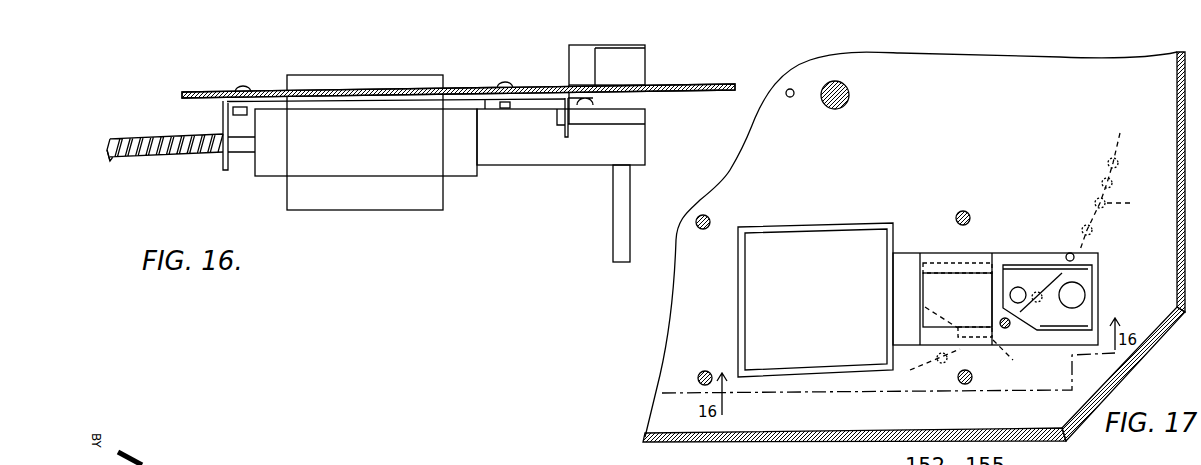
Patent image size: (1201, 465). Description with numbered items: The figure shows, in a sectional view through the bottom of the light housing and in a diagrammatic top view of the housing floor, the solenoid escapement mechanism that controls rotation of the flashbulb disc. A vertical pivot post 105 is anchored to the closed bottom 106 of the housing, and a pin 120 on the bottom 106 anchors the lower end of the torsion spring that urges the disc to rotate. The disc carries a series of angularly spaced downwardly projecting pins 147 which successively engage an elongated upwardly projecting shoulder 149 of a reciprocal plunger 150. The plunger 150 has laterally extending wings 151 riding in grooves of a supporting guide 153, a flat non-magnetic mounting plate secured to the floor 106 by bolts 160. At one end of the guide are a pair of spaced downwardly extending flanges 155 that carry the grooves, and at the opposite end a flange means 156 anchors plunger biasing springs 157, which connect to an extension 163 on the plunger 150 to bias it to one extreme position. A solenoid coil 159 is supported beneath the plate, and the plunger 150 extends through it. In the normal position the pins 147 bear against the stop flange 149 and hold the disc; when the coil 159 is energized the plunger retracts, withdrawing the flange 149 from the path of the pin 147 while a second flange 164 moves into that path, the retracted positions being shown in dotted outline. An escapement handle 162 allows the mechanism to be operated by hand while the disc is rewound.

In FIG. 17, the vertical pivot post 105 is at (849, 93).
In FIG. 16, the closed bottom 106 is at (698, 86).
In FIG. 17, the closed bottom 106 is at (1012, 121).
In FIG. 17, the pin 120 is at (791, 97).
In FIG. 17, the pins 147 is at (1072, 254).
In FIG. 16, the shoulder 149 is at (582, 52).
In FIG. 17, the shoulder 149 is at (1077, 253).
In FIG. 16, the reciprocal plunger 150 is at (632, 143).
In FIG. 17, the reciprocal plunger 150 is at (985, 285).
In FIG. 16, the wings 151 is at (632, 115).
In FIG. 16, the supporting guide 153 is at (487, 98).
In FIG. 16, the flanges 155 is at (567, 138).
In FIG. 16, the flange means 156 is at (221, 160).
In FIG. 16, the plunger biasing springs 157 is at (147, 158).
In FIG. 16, the solenoid coil 159 is at (388, 199).
In FIG. 17, the solenoid coil 159 is at (832, 315).
In FIG. 16, the bolts 160 is at (243, 88).
In FIG. 17, the bolts 160 is at (711, 217).
In FIG. 16, the escapement handle 162 is at (613, 237).
In FIG. 16, the extension 163 is at (107, 148).
In FIG. 16, the second flange 164 is at (630, 68).
In FIG. 17, the second flange 164 is at (1067, 330).